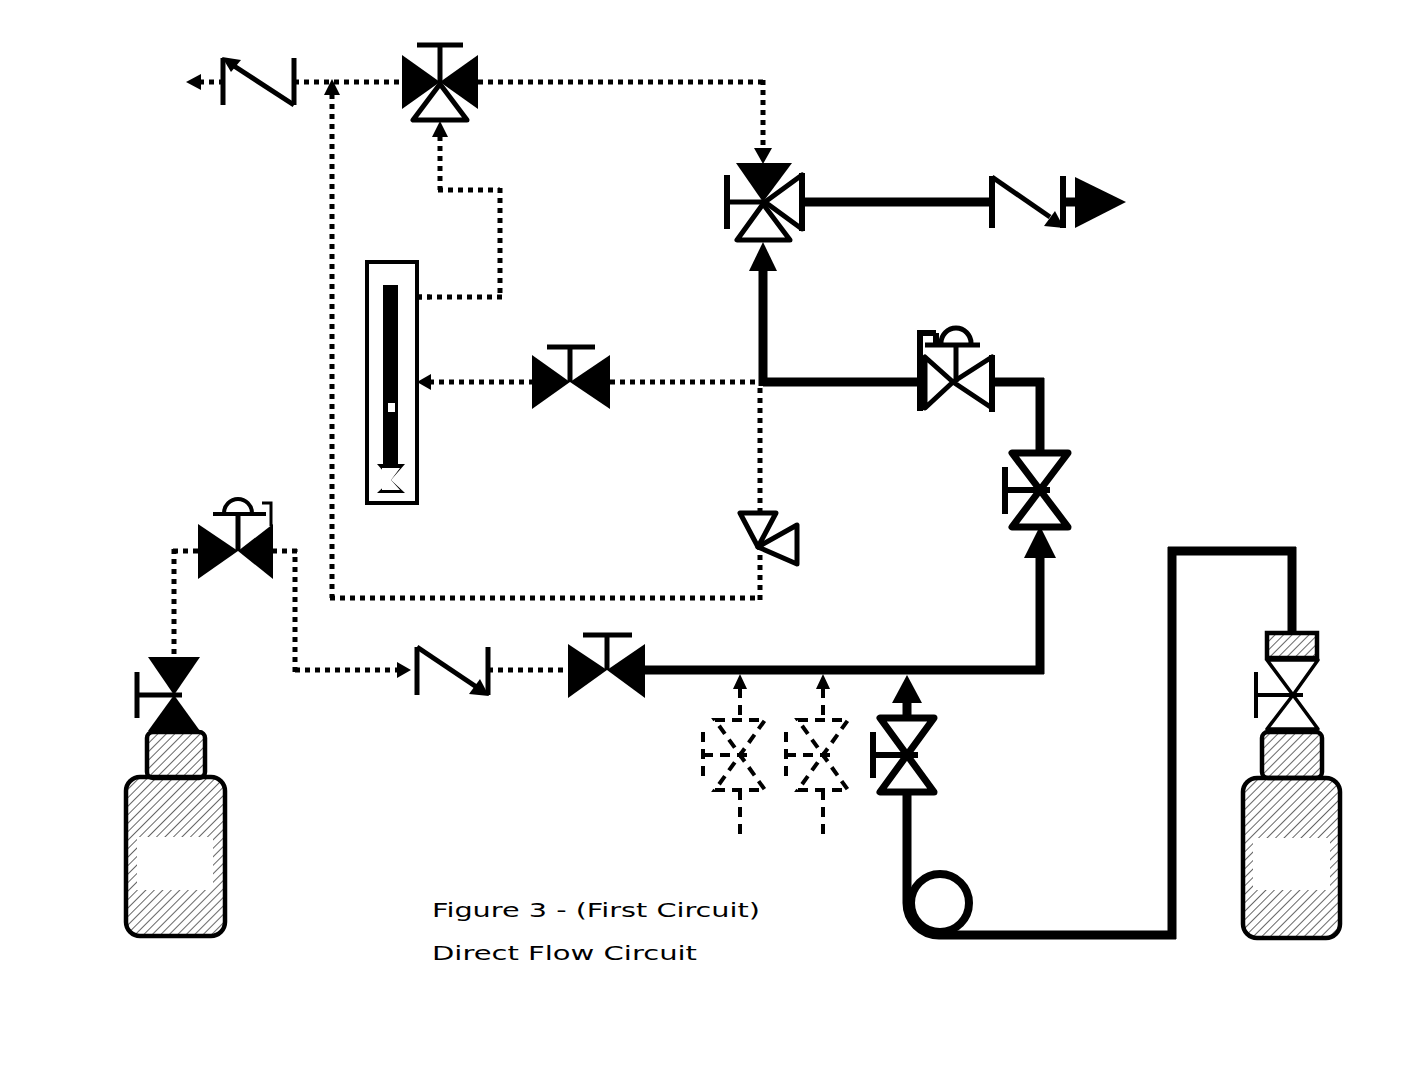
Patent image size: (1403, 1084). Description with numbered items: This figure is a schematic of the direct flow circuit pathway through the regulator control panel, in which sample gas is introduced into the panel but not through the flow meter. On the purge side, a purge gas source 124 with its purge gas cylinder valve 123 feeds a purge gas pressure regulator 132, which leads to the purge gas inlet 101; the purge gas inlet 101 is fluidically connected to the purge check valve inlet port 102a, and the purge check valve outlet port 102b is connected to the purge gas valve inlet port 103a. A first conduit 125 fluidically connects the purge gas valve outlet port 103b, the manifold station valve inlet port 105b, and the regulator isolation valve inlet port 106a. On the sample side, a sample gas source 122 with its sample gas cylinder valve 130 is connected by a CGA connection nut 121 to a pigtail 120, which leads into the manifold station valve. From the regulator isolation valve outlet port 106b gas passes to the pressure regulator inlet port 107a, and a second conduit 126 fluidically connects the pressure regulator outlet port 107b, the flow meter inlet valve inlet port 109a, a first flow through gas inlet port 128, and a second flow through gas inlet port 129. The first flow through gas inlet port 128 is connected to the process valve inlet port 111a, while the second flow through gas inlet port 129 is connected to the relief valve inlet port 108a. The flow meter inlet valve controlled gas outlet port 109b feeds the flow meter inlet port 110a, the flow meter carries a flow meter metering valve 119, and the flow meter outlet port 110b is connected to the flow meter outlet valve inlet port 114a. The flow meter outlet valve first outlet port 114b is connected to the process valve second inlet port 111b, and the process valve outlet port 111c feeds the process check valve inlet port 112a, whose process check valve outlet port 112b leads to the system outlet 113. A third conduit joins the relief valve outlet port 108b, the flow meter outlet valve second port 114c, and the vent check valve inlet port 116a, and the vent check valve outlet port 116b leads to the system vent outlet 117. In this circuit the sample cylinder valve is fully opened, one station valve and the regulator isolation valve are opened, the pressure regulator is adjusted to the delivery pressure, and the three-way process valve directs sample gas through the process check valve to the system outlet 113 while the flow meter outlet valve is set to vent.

The purge gas inlet 101 is at (342, 613).
The purge check valve inlet port 102a is at (429, 688).
The purge check valve outlet port 102b is at (517, 688).
The purge gas valve inlet port 103a is at (579, 687).
The purge gas valve outlet port 103b is at (627, 682).
The manifold station valve inlet port 105b is at (941, 733).
The regulator isolation valve inlet port 106a is at (1067, 503).
The regulator isolation valve outlet port 106b is at (1071, 468).
The pressure regulator inlet port 107a is at (998, 405).
The pressure regulator outlet port 107b is at (871, 386).
The relief valve inlet port 108a is at (733, 533).
The relief valve outlet port 108b is at (542, 339).
The flow meter inlet valve inlet port 109a is at (596, 396).
The flow meter inlet valve controlled gas outlet port 109b is at (536, 400).
The flow meter inlet port 110a is at (474, 368).
The flow meter outlet port 110b is at (449, 280).
The process valve inlet port 111a is at (742, 225).
The process valve second inlet port 111b is at (743, 166).
The process valve outlet port 111c is at (878, 199).
The process check valve inlet port 112a is at (1009, 225).
The process check valve outlet port 112b is at (1074, 225).
The system outlet 113 is at (1120, 202).
The flow meter outlet valve inlet port 114a is at (464, 190).
The flow meter outlet valve first outlet port 114b is at (594, 104).
The flow meter outlet valve second port 114c is at (367, 76).
The vent check valve inlet port 116a is at (271, 100).
The vent check valve outlet port 116b is at (209, 99).
The system vent outlet 117 is at (176, 83).
The flow meter metering valve 119 is at (392, 400).
The pigtail 120 is at (1013, 862).
The CGA connection nut 121 is at (1274, 743).
The sample gas source 122 is at (1291, 835).
The purge gas cylinder valve 123 is at (194, 694).
The purge gas source 124 is at (175, 834).
The first conduit 125 is at (850, 600).
The second conduit 126 is at (687, 364).
The first flow through gas inlet port 128 is at (782, 314).
The second flow through gas inlet port 129 is at (787, 451).
The sample gas cylinder valve 130 is at (1318, 694).
The purge gas pressure regulator 132 is at (222, 555).